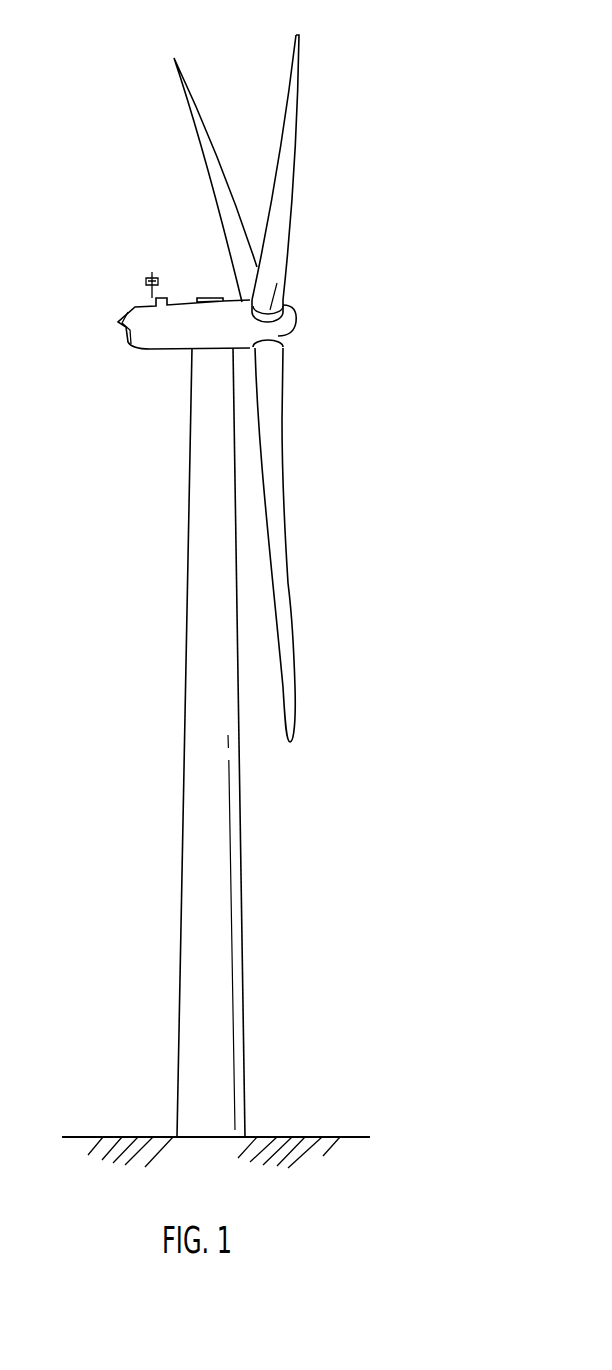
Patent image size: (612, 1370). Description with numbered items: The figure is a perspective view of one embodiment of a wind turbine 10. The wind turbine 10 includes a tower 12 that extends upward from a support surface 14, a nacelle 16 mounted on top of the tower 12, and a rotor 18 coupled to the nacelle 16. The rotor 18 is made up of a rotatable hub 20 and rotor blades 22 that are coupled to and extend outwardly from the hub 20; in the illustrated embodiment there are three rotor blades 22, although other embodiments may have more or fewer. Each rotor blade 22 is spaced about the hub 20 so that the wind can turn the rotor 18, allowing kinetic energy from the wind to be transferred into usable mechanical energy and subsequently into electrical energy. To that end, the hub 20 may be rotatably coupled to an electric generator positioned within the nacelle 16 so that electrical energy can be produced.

The wind turbine 10 is at (418, 112).
The tower 12 is at (198, 808).
The support surface 14 is at (135, 1137).
The nacelle 16 is at (157, 350).
The rotor 18 is at (302, 302).
The rotatable hub 20 is at (290, 332).
The rotor blade 22 is at (287, 103).